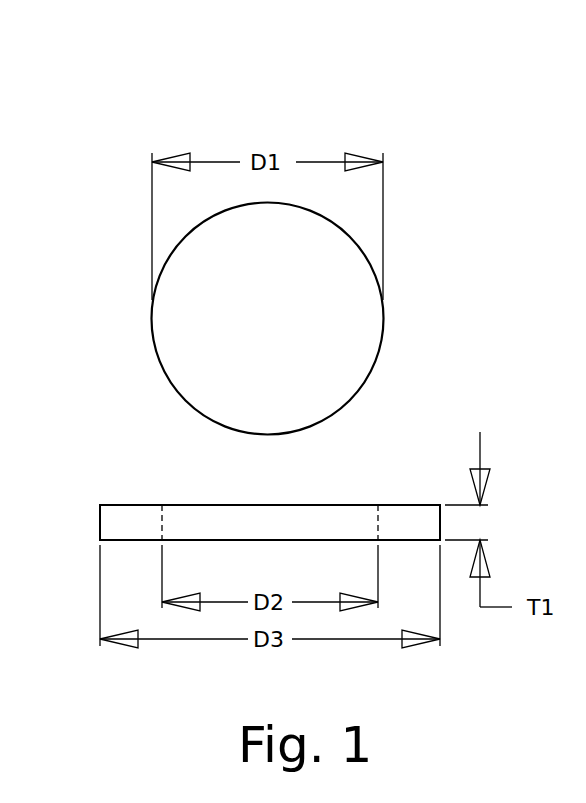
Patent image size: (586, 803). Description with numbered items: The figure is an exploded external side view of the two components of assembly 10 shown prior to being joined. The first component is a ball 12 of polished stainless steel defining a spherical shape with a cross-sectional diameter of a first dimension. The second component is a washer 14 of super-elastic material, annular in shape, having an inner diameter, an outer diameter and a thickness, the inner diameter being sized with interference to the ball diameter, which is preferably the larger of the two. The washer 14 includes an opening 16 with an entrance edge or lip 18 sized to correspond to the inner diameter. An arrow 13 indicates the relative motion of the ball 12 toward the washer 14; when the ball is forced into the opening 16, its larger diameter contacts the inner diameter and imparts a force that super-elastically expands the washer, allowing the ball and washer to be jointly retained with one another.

The assembly 10 is at (120, 252).
The ball 12 is at (363, 322).
The relative motion arrow 13 is at (260, 120).
The washer 14 is at (112, 522).
The opening 16 is at (162, 520).
The entrance edge or lip 18 is at (378, 508).